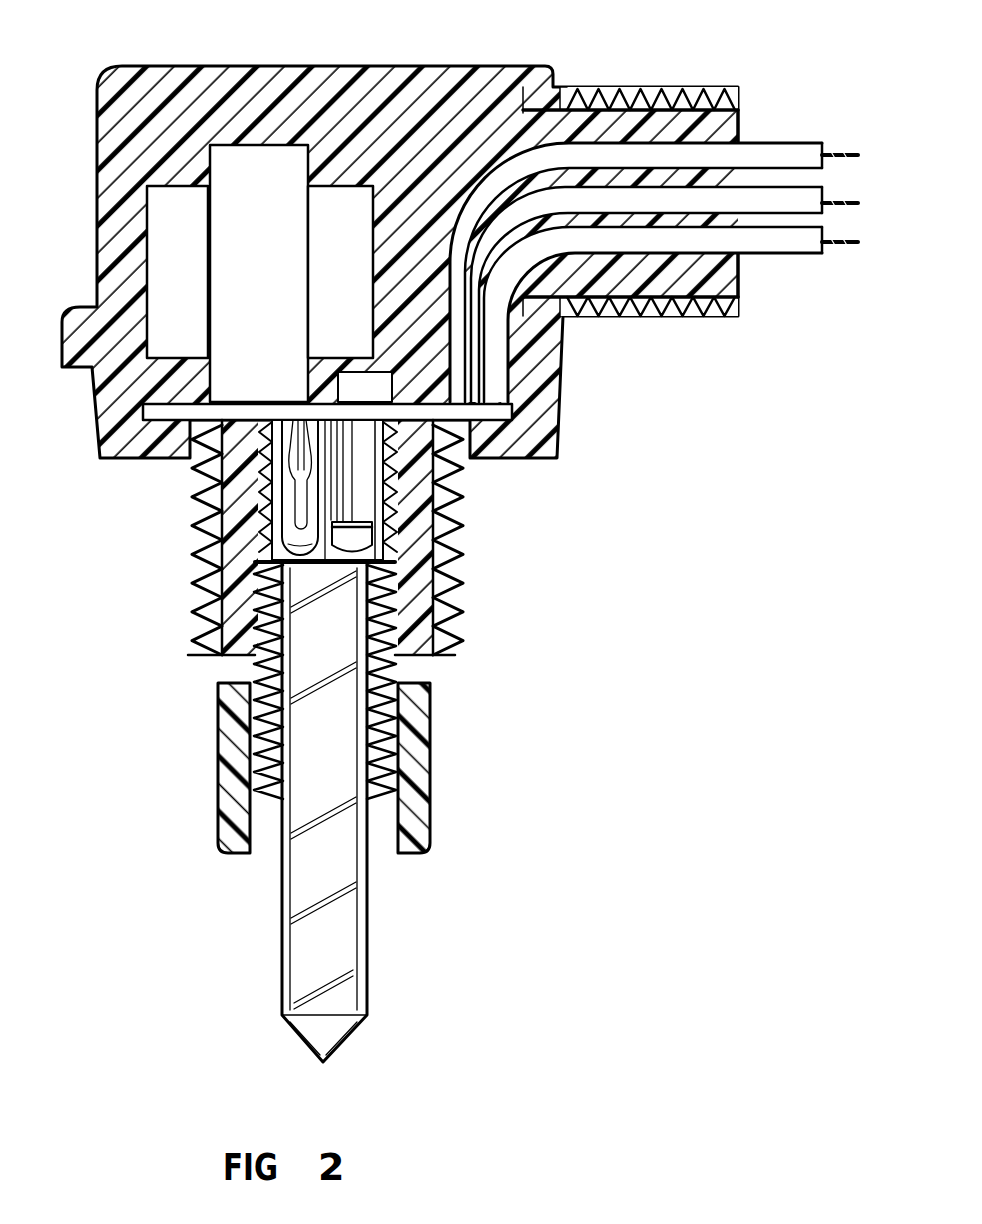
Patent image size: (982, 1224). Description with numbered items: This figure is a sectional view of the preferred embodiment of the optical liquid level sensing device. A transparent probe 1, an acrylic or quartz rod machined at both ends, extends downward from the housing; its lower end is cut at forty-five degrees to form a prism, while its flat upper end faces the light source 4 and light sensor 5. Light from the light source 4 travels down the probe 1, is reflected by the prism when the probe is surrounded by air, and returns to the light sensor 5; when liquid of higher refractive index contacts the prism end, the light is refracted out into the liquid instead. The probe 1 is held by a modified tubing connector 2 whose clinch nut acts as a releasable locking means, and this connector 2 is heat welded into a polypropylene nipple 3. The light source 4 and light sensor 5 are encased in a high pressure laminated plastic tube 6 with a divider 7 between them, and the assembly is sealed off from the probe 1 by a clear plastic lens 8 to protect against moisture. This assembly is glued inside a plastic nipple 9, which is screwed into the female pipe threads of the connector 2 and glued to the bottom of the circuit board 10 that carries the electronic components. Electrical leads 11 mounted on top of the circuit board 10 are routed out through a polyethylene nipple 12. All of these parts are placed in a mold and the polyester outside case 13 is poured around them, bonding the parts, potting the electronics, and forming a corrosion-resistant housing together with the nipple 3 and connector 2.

The probe 1 is at (337, 915).
The modified tubing connector 2 is at (390, 670).
The polypropylene nipple 3 is at (437, 587).
The light source 4 is at (198, 563).
The light sensor 5 is at (357, 540).
The high pressure laminated plastic tube 6 is at (433, 466).
The high pressure laminated plastic divider 7 is at (202, 502).
The clear plastic lens 8 is at (230, 608).
The plastic nipple 9 is at (328, 485).
The circuit board 10 is at (178, 402).
The electrical leads 11 is at (493, 348).
The polyethylene nipple 12 is at (630, 304).
The outside case 13 is at (410, 80).